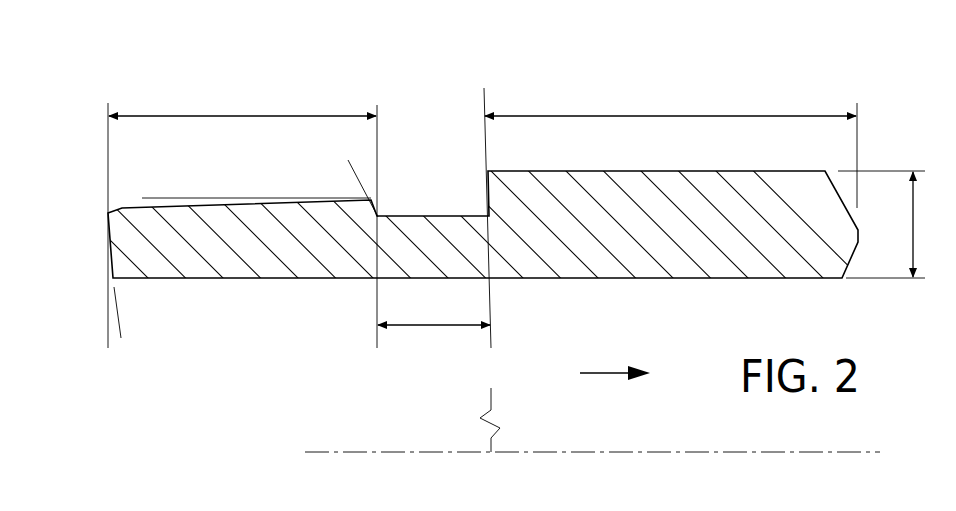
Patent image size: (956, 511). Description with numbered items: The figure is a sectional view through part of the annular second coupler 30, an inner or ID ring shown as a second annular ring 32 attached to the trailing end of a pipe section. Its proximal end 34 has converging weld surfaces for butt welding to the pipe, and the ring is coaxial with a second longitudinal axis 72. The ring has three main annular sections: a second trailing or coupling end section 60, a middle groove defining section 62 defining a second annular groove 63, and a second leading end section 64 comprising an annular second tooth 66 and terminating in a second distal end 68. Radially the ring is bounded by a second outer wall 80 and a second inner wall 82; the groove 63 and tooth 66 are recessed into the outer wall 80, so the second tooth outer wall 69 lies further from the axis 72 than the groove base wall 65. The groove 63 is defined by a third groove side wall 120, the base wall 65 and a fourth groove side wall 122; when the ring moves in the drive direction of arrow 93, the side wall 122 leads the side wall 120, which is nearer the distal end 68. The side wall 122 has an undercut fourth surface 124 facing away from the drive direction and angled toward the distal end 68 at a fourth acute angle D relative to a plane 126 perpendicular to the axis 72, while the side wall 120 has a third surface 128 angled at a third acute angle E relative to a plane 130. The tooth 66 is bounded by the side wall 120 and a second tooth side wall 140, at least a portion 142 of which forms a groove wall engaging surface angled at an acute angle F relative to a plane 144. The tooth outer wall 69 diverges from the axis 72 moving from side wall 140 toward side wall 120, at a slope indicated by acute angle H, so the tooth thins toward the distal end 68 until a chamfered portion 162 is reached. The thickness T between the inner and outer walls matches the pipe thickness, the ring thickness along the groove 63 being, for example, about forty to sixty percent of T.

The annular second coupler 30 is at (192, 88).
The second annular ring 32 is at (327, 192).
The proximal end 34 is at (860, 236).
The second trailing or coupling end section 60 is at (630, 114).
The middle annular groove defining section 62 is at (430, 327).
The second annular groove 63 is at (445, 188).
The second leading end section 64 is at (245, 114).
The base wall 65 is at (452, 206).
The second tooth 66 is at (232, 222).
The second distal end 68 is at (122, 208).
The second tooth outer wall 69 is at (257, 199).
The second longitudinal axis 72 is at (367, 453).
The second outer wall 80 is at (700, 170).
The second inner wall 82 is at (683, 280).
The arrow 93 is at (592, 378).
The third annular groove side wall 120 is at (378, 211).
The fourth annular groove side wall 122 is at (487, 200).
The fourth surface 124 is at (487, 172).
The plane 126 is at (492, 314).
The third surface 128 is at (379, 215).
The plane 130 is at (376, 310).
The second tooth side wall 140 is at (106, 229).
The groove wall engaging surface 142 is at (110, 270).
The plane 144 is at (107, 326).
The chamfered portion 162 is at (112, 210).
The third acute angle E is at (394, 168).
The fourth acute angle D is at (468, 188).
The acute angle H is at (160, 228).
The acute angle F is at (86, 312).
The thickness T is at (917, 240).